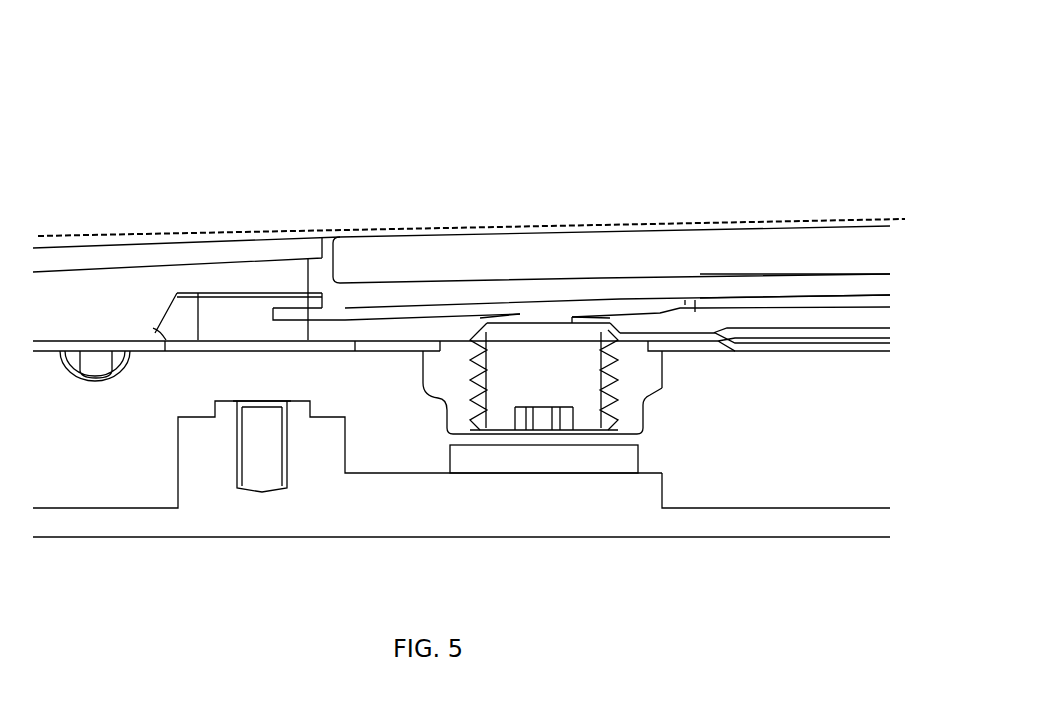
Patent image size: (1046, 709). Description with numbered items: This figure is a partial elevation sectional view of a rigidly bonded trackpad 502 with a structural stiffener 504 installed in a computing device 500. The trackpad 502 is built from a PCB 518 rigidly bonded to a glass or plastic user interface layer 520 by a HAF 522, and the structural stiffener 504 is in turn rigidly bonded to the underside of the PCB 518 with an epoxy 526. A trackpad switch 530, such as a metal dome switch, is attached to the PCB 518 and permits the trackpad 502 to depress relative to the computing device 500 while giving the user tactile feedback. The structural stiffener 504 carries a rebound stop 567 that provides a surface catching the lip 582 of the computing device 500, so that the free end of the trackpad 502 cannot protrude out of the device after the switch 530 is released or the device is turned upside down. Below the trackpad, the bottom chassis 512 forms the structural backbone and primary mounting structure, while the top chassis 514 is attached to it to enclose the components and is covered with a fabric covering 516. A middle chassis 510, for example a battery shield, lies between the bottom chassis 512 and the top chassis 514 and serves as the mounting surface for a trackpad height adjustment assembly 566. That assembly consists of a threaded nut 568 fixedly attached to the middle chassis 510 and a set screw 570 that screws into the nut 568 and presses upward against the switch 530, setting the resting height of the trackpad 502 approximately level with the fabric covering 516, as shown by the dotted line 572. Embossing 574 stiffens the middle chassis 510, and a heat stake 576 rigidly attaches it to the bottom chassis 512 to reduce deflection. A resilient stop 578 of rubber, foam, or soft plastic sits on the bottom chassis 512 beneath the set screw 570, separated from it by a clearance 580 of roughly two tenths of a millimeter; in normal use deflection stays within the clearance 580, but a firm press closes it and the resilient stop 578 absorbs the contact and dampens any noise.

The computing device 500 is at (224, 84).
The trackpad 502 is at (560, 188).
The structural stiffener 504 is at (715, 305).
The middle chassis 510 is at (240, 345).
The bottom chassis 512 is at (416, 522).
The top chassis 514 is at (121, 314).
The fabric covering 516 is at (190, 246).
The PCB 518 is at (847, 283).
The user interface layer 520 is at (596, 267).
The HAF 522 is at (442, 282).
The epoxy 526 is at (735, 302).
The trackpad switch 530 is at (538, 317).
The trackpad height adjustment assembly 566 is at (672, 438).
The rebound stop 567 is at (292, 313).
The threaded nut 568 is at (633, 371).
The set screw 570 is at (565, 384).
The dotted line 572 is at (72, 236).
The embossing 574 is at (742, 351).
The heat stake 576 is at (100, 372).
The resilient stop 578 is at (550, 460).
The clearance 580 is at (438, 440).
The lip 582 is at (302, 295).